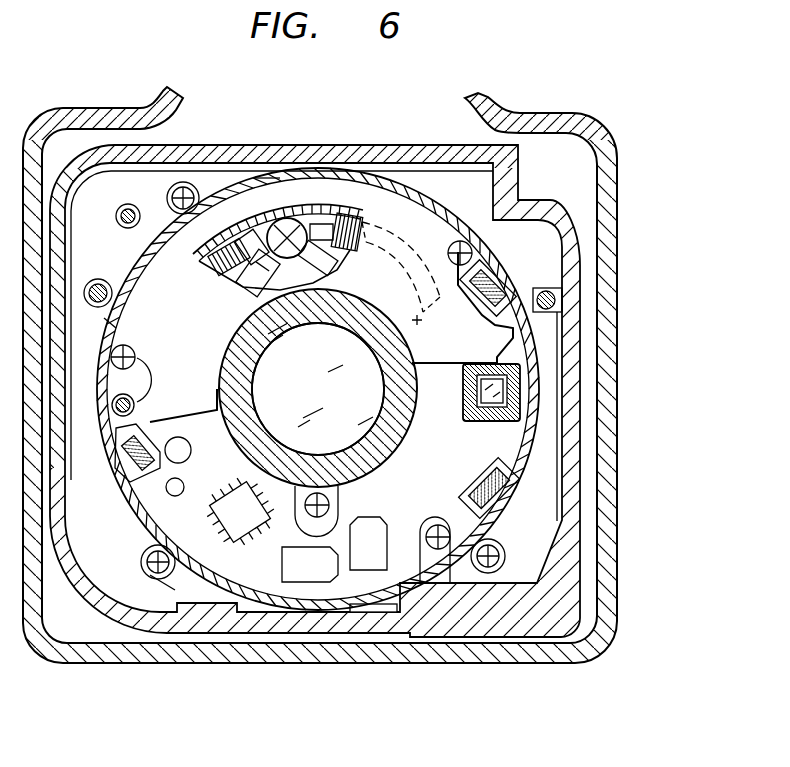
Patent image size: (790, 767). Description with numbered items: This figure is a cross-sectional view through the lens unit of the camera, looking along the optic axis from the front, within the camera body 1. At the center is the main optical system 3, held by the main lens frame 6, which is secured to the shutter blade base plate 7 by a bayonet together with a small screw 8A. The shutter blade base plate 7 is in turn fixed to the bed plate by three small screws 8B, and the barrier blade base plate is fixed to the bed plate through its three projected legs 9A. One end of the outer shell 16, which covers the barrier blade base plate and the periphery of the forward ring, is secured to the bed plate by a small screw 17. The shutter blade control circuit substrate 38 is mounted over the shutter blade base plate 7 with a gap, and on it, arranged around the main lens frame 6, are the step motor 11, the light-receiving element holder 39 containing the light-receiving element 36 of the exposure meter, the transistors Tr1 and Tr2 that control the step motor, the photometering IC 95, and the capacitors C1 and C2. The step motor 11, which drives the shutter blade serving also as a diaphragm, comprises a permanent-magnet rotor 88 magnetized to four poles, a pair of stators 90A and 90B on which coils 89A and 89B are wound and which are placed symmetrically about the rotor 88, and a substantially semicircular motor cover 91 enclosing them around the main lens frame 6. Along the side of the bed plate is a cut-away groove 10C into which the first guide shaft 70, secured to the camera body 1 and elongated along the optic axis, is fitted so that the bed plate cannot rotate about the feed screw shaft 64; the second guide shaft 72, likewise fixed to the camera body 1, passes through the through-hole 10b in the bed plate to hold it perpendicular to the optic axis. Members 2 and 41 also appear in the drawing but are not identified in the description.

The camera body 1 is at (95, 596).
The outer case 2 is at (148, 655).
The main optical system 3 is at (380, 428).
The main lens frame 6 is at (416, 378).
The shutter blade base plate 7 is at (265, 188).
The small screw 8A is at (330, 503).
The small screws 8B is at (456, 241).
The projected legs 9A is at (500, 278).
The through-hole 10b is at (132, 240).
The cut-away groove 10C is at (564, 304).
The step motor 11 is at (323, 217).
The outer shell 16 is at (190, 586).
The small screw 17 is at (172, 197).
The light-receiving element 36 is at (495, 398).
The shutter blade control circuit substrate 38 is at (412, 593).
The light-receiving element holder 39 is at (462, 398).
The screw 41 is at (112, 408).
The feed screw shaft 64 is at (116, 225).
The first guide shaft 70 is at (545, 288).
The second guide shaft 72 is at (96, 284).
The rotor 88 is at (295, 200).
The coil 89A is at (216, 275).
The coil 89B is at (354, 211).
The stator 90A is at (240, 290).
The stator 90B is at (412, 328).
The motor cover 91 is at (113, 320).
The photometering IC 95 is at (208, 516).
The capacitor C1 is at (178, 437).
The capacitor C2 is at (186, 482).
The transistor Tr1 is at (315, 560).
The transistor Tr2 is at (370, 545).